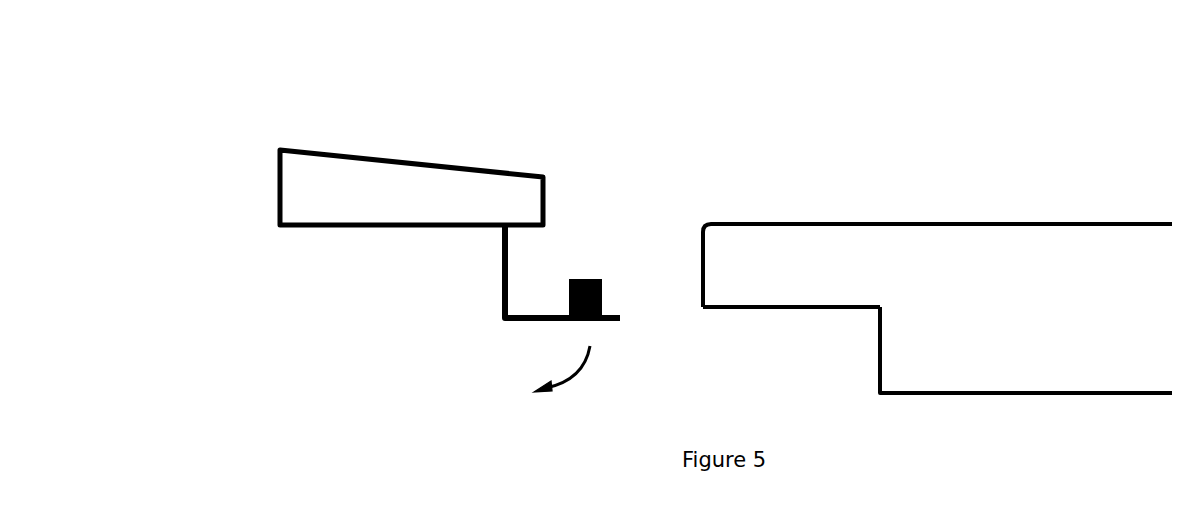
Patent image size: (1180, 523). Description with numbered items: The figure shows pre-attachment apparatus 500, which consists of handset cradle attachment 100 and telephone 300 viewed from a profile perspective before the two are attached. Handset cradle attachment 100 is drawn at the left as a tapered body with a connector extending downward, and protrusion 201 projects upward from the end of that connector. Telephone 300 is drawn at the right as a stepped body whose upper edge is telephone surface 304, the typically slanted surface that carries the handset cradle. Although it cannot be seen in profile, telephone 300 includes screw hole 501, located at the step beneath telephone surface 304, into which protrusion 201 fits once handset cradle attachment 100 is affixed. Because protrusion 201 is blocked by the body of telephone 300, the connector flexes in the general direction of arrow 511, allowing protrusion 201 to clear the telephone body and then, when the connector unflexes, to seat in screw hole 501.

The pre-attachment apparatus 500 is at (240, 75).
The handset cradle attachment 100 is at (403, 163).
The protrusion 201 is at (594, 280).
The arrow 511 is at (571, 372).
The telephone 300 is at (937, 292).
The telephone surface 304 is at (1021, 223).
The screw hole 501 is at (762, 308).